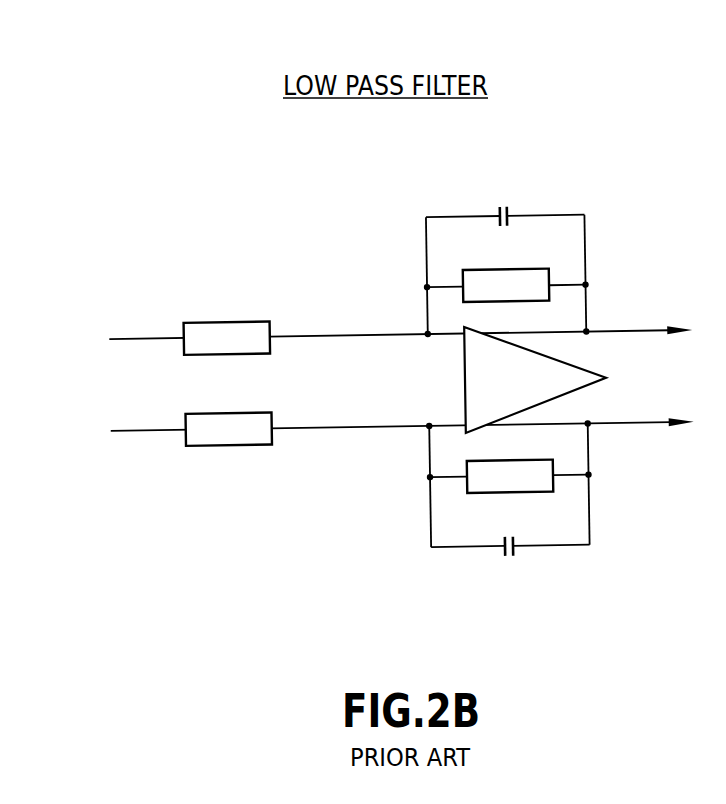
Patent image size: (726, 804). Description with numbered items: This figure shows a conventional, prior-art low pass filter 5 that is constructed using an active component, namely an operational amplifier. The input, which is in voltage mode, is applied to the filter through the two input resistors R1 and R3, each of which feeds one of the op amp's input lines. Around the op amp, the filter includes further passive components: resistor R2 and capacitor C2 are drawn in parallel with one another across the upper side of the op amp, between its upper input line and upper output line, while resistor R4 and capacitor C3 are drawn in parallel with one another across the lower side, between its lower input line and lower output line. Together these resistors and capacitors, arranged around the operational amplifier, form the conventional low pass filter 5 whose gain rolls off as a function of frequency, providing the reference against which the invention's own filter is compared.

The low pass filter 5 is at (638, 170).
The resistor R1 is at (226, 323).
The resistor R2 is at (505, 271).
The resistor R3 is at (229, 448).
The resistor R4 is at (510, 492).
The capacitor C2 is at (504, 200).
The capacitor C3 is at (510, 564).